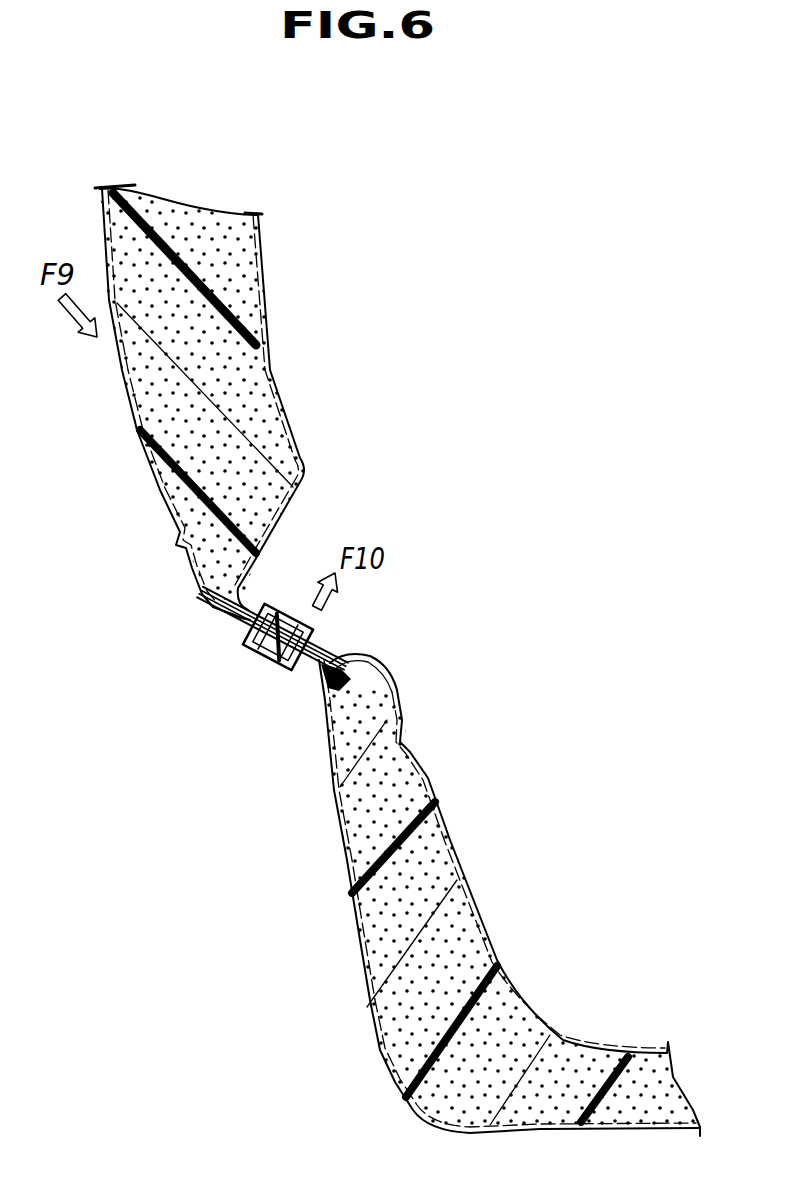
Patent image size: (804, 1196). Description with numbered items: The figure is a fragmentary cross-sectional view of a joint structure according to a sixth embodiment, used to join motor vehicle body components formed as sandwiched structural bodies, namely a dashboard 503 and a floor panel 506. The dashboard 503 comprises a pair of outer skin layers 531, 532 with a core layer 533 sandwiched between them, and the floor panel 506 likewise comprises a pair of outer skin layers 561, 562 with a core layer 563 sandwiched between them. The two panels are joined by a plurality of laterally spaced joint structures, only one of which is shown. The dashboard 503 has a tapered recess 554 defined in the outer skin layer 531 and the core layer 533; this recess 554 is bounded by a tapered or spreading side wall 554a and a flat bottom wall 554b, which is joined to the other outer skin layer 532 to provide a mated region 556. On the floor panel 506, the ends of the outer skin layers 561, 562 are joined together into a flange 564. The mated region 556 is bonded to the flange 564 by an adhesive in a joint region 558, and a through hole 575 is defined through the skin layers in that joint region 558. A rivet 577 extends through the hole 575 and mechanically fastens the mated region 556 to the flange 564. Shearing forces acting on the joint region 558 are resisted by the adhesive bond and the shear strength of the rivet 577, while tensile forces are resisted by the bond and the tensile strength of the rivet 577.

The dashboard 503 is at (328, 362).
The outer skin layer 531 is at (262, 333).
The outer skin layer 532 is at (128, 393).
The core layer 533 is at (218, 263).
The tapered recess 554 is at (305, 500).
The tapered side wall 554a is at (280, 533).
The flat bottom wall 554b is at (248, 605).
The mated region 556 is at (317, 657).
The joint region 558 is at (243, 625).
The outer skin layer 561 is at (463, 863).
The outer skin layer 562 is at (357, 965).
The core layer 563 is at (467, 983).
The flange 564 is at (303, 675).
The through hole 575 is at (260, 653).
The rivet 577 is at (273, 663).
The floor panel 506 is at (360, 1068).